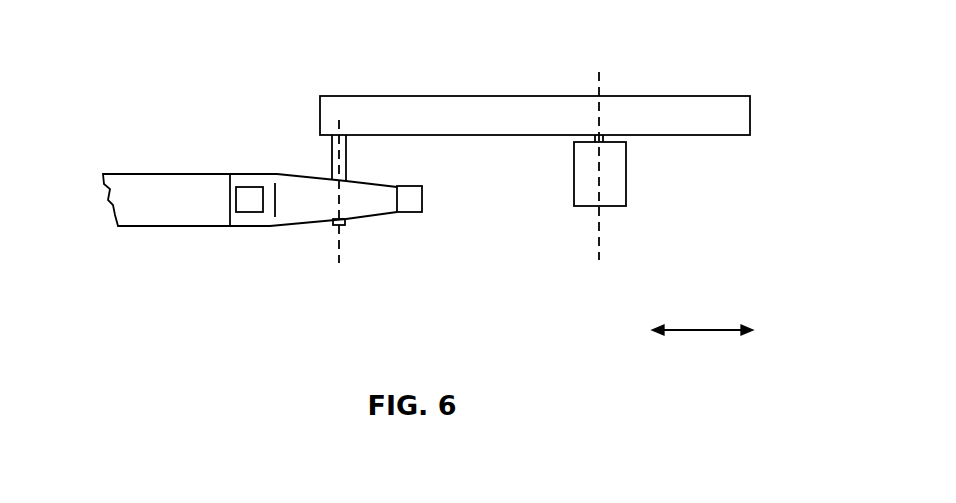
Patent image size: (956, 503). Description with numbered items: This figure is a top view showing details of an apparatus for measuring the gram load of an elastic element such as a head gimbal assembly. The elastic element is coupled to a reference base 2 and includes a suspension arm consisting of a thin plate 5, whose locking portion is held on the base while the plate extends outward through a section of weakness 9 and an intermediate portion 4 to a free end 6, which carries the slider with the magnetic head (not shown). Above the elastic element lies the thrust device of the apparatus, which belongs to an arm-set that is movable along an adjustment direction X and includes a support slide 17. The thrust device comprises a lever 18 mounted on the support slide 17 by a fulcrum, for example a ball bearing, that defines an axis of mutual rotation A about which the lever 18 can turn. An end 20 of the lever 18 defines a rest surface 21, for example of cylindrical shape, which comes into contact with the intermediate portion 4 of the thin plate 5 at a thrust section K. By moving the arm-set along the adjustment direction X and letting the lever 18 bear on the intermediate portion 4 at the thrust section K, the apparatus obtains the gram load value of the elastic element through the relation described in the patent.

The reference base 2 is at (142, 187).
The intermediate portion 4 is at (298, 205).
The thin plate 5 is at (242, 180).
The free end 6 is at (410, 199).
The section of weakness 9 is at (280, 172).
The support slide 17 is at (615, 177).
The lever 18 is at (708, 103).
The end of lever 20 is at (328, 107).
The rest surface 21 is at (344, 225).
The axis of mutual rotation A is at (609, 167).
The thrust section K is at (342, 263).
The adjustment direction X is at (702, 310).